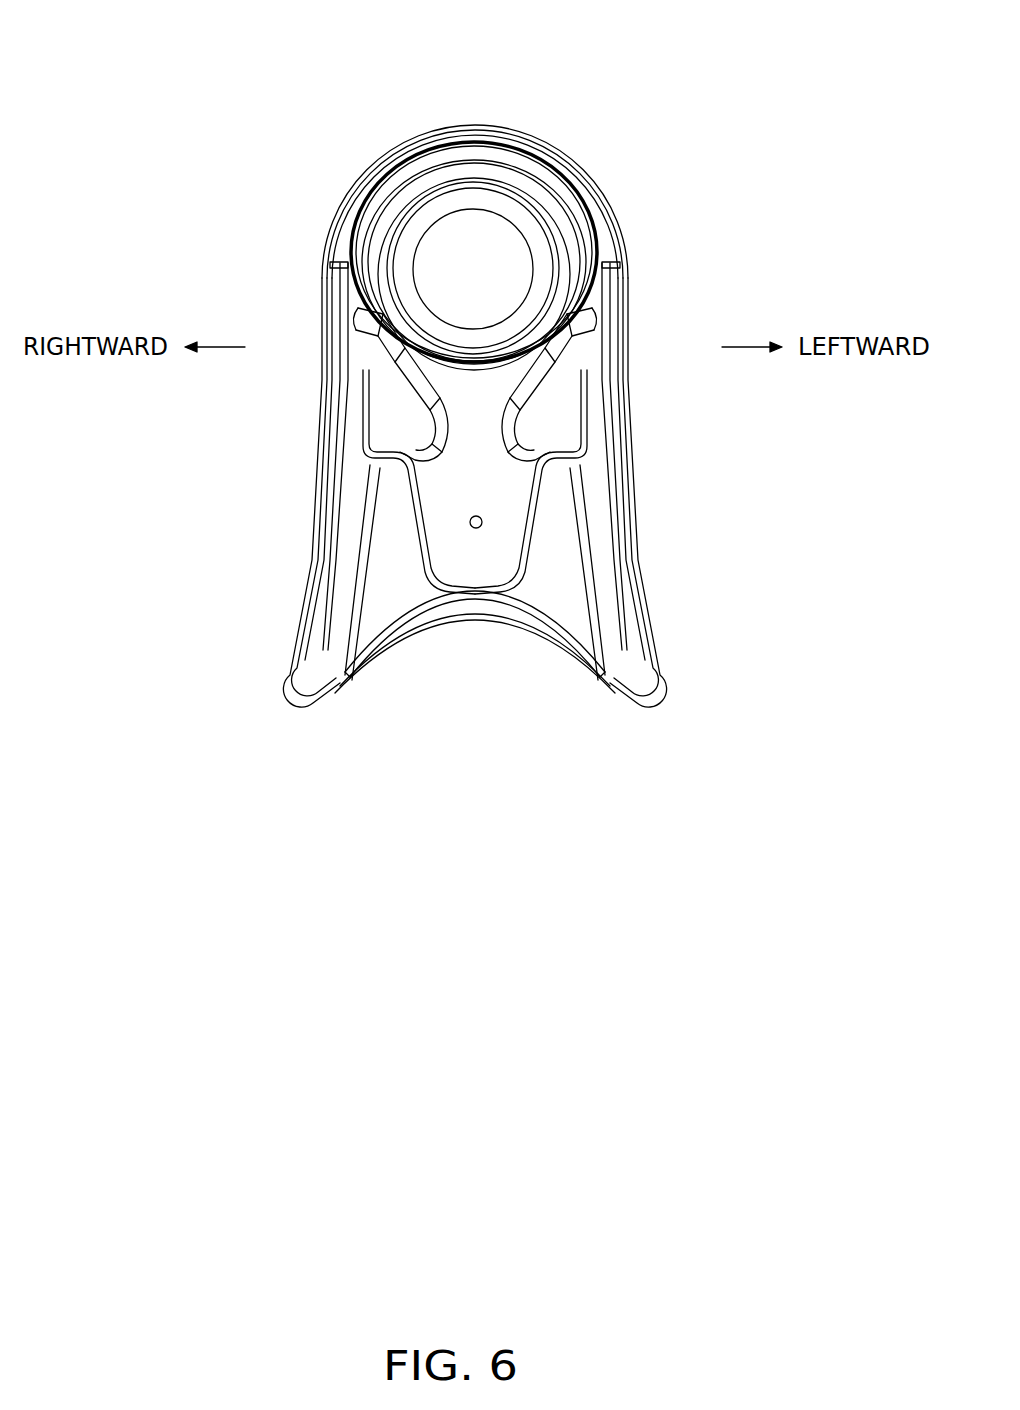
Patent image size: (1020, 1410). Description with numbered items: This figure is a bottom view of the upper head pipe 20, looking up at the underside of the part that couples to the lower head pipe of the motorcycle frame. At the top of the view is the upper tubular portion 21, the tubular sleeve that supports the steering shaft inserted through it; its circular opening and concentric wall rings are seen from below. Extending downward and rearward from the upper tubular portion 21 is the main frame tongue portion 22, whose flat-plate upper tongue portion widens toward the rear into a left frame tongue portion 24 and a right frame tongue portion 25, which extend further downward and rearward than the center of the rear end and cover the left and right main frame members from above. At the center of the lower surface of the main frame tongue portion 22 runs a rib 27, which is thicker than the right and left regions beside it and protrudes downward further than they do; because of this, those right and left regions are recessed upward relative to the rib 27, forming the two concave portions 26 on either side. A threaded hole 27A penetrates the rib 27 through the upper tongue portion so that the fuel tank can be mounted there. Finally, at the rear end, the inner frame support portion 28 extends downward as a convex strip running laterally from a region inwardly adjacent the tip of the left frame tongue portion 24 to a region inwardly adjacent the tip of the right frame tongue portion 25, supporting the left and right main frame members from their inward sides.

The upper head pipe 20 is at (388, 120).
The upper tubular portion 21 is at (552, 130).
The main frame tongue portion 22 is at (418, 580).
The left frame tongue portion 24 is at (628, 640).
The right frame tongue portion 25 is at (320, 625).
The concave portion 26 is at (390, 420).
The rib 27 is at (505, 487).
The threaded hole 27A is at (482, 522).
The inner frame support portion 28 is at (520, 616).